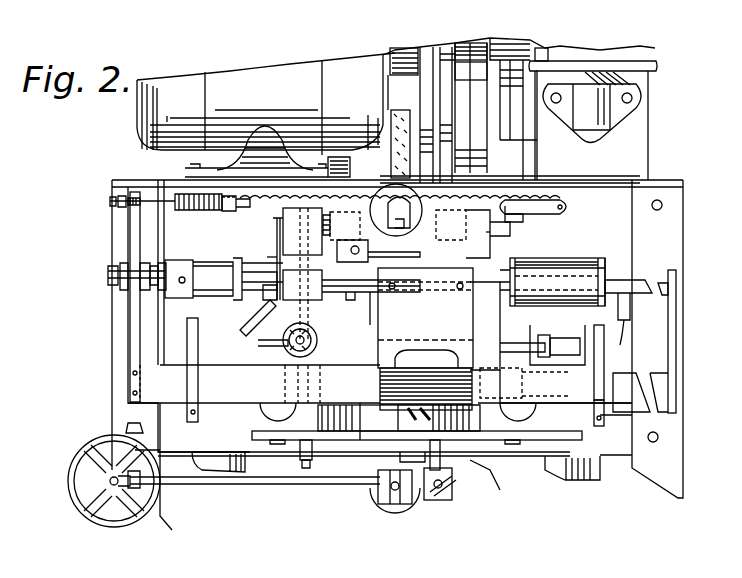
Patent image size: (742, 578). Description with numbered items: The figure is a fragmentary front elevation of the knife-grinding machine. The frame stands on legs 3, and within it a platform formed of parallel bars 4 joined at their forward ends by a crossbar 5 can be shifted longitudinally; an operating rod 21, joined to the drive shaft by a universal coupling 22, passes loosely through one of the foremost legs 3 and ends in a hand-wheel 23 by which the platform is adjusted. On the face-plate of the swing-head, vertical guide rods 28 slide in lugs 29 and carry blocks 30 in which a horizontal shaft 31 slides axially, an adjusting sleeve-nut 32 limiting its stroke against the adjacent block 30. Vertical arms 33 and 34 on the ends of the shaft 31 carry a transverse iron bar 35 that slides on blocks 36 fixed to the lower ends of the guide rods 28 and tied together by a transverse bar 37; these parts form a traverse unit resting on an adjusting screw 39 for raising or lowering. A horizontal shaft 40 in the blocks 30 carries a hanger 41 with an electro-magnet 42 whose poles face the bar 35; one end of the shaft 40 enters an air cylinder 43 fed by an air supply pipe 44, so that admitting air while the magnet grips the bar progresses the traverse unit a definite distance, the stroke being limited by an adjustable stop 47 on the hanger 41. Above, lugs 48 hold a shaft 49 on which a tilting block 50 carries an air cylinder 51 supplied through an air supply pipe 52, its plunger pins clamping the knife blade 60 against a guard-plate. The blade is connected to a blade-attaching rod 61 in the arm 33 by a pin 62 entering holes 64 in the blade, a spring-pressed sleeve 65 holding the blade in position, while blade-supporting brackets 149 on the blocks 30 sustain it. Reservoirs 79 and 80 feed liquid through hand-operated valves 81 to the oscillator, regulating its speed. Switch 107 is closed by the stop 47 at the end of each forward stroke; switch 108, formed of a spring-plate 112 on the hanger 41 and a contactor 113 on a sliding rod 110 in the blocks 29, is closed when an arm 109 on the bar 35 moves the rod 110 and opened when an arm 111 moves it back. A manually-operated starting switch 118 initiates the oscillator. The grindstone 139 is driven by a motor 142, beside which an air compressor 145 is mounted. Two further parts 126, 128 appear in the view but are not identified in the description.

The legs 3 is at (128, 366).
The parallel bars 4 is at (398, 418).
The crossbar 5 is at (582, 437).
The operating rod 21 is at (270, 488).
The universal coupling 22 is at (384, 500).
The hand-wheel 23 is at (96, 526).
The vertical guide rods 28 is at (501, 383).
The lugs 29 is at (280, 235).
The blocks 30 is at (266, 259).
The horizontal shaft 31 is at (108, 278).
The adjusting sleeve-nut 32 is at (214, 272).
The vertical arm 33 is at (130, 325).
The vertical arm 34 is at (672, 310).
The iron bar 35 is at (250, 380).
The blocks 36 is at (320, 378).
The transverse bar 37 is at (362, 411).
The adjusting screw 39 is at (399, 418).
The horizontal shaft 40 is at (402, 290).
The hanger 41 is at (429, 306).
The electro-magnet 42 is at (426, 378).
The air cylinder 43 is at (595, 242).
The air supply pipe 44 is at (612, 360).
The adjustable stop 47 is at (245, 305).
The lugs 48 is at (394, 225).
The shaft 49 is at (475, 239).
The tilting block 50 is at (378, 248).
The air cylinder 51 is at (396, 210).
The air supply pipe 52 is at (406, 212).
The knife blade 60 is at (265, 208).
The blade-attaching rod 61 is at (110, 202).
The pin 62 is at (236, 212).
The holes 64 is at (562, 207).
The spring-pressed sleeve 65 is at (210, 189).
The reservoir 79 is at (562, 482).
The reservoir 80 is at (340, 468).
The hand-operated valve 81 is at (440, 500).
The switch 107 is at (350, 300).
The switch 108 is at (556, 372).
The arm 109 is at (187, 355).
The sliding rod 110 is at (263, 318).
The arm 111 is at (604, 395).
The spring-plate 112 is at (555, 333).
The contactor 113 is at (552, 362).
The starting switch 118 is at (318, 342).
The bar 126 is at (258, 332).
The rod 128 is at (320, 320).
The grindstone 139 is at (400, 108).
The motor 142 is at (266, 104).
The air compressor 145 is at (596, 128).
The blade-supporting brackets 149 is at (228, 250).